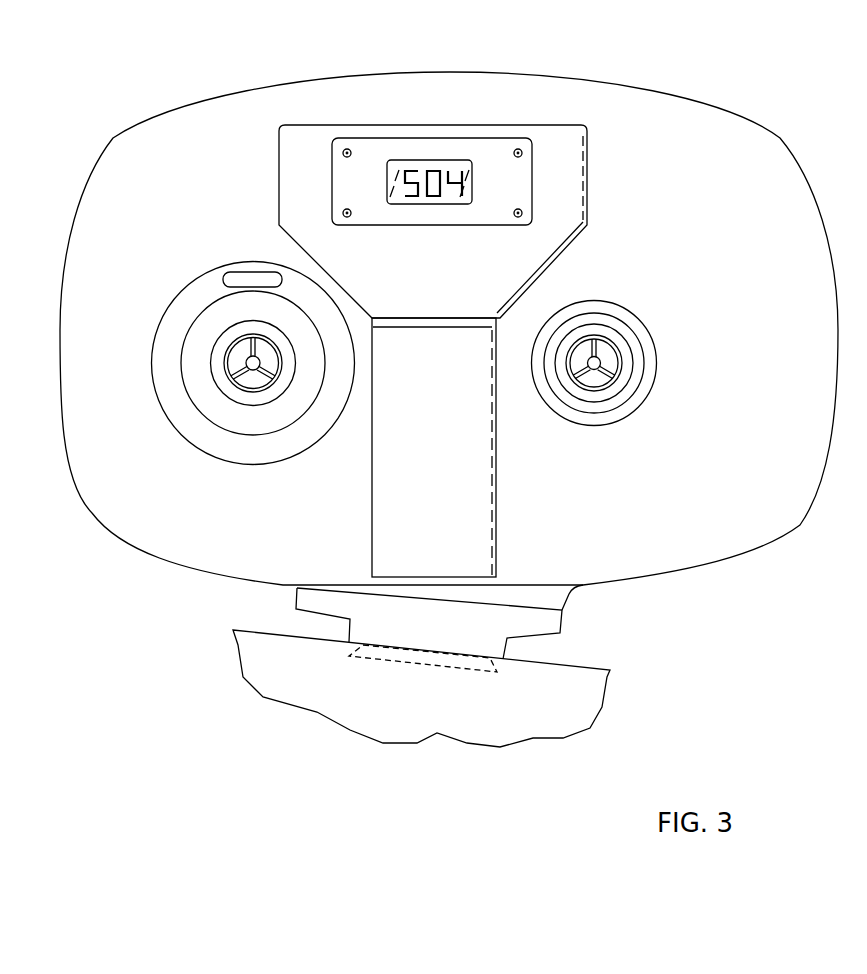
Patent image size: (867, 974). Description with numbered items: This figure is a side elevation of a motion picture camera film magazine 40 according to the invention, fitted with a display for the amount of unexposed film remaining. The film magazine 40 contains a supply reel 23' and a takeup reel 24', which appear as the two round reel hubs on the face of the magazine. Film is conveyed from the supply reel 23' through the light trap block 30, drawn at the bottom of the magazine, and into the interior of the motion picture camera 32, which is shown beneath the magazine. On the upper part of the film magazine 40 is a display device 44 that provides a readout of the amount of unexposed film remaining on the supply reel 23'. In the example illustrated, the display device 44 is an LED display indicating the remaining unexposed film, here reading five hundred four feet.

The film magazine 40 is at (108, 147).
The display device 44 is at (458, 160).
The takeup reel 24' is at (239, 353).
The supply reel 23' is at (620, 349).
The light trap block 30 is at (342, 602).
The motion picture camera 32 is at (253, 660).